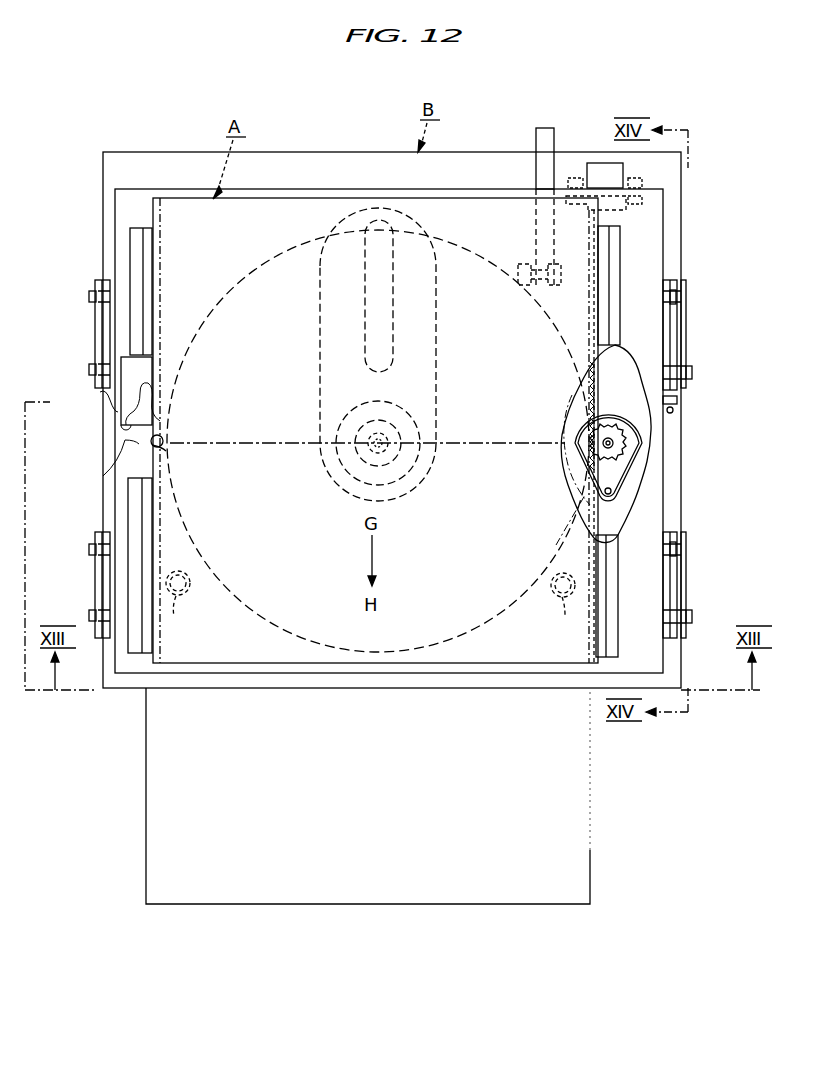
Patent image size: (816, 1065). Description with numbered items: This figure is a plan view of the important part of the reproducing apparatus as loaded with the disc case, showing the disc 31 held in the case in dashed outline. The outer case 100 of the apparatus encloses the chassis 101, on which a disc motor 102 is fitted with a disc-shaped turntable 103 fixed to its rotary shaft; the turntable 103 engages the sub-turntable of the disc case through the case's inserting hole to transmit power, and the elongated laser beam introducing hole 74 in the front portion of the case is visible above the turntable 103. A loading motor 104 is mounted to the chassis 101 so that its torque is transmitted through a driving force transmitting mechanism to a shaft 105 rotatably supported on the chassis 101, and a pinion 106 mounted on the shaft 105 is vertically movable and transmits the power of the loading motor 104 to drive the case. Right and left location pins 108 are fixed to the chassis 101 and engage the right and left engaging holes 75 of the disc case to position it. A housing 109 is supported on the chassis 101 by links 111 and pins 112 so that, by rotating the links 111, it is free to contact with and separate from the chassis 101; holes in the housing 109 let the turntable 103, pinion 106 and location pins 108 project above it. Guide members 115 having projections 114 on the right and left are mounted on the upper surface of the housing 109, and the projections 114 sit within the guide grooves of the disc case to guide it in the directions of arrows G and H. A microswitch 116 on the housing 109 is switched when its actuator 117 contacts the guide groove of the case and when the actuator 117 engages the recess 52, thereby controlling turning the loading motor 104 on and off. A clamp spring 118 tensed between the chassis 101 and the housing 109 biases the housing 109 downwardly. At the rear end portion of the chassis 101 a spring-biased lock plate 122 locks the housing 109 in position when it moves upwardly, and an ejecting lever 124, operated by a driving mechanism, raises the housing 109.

The disc 31 is at (282, 248).
The recess 52 is at (162, 440).
The laser beam introducing hole 74 is at (391, 318).
The engaging holes 75 is at (186, 591).
The outer case 100 is at (38, 705).
The chassis 101 is at (103, 185).
The disc motor 102 is at (406, 436).
The turntable 103 is at (374, 425).
The loading motor 104 is at (628, 460).
The shaft 105 is at (612, 440).
The pinion 106 is at (630, 437).
The location pins 108 is at (373, 620).
The housing 109 is at (115, 224).
The links 111 is at (104, 329).
The pins 112 is at (90, 297).
The projections 114 is at (145, 306).
The guide members 115 is at (145, 280).
The microswitch 116 is at (148, 372).
The actuator 117 is at (158, 439).
The clamp spring 118 is at (680, 403).
The lock plate 122 is at (604, 168).
The ejecting lever 124 is at (542, 126).